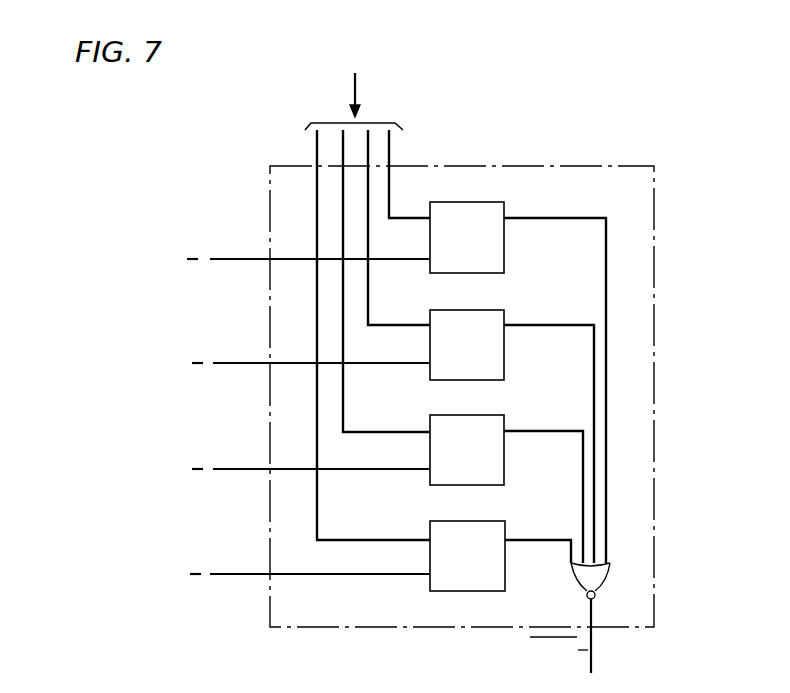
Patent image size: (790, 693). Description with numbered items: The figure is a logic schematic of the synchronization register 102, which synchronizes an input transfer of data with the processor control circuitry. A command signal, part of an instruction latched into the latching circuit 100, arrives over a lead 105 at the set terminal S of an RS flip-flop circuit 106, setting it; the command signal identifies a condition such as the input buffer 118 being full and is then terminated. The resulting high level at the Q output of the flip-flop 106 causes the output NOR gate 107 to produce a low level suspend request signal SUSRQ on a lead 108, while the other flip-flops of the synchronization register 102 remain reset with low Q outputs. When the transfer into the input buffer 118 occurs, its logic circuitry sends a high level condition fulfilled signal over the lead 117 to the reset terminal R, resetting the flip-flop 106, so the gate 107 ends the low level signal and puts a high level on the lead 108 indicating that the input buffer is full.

The latching circuit 100 is at (355, 90).
The synchronization register 102 is at (577, 167).
The lead 105 is at (389, 151).
The RS flip-flop circuit 106 is at (504, 257).
The output NOR gate 107 is at (600, 578).
The lead 108 is at (593, 654).
The lead 117 is at (308, 244).
The input buffer 118 is at (276, 390).